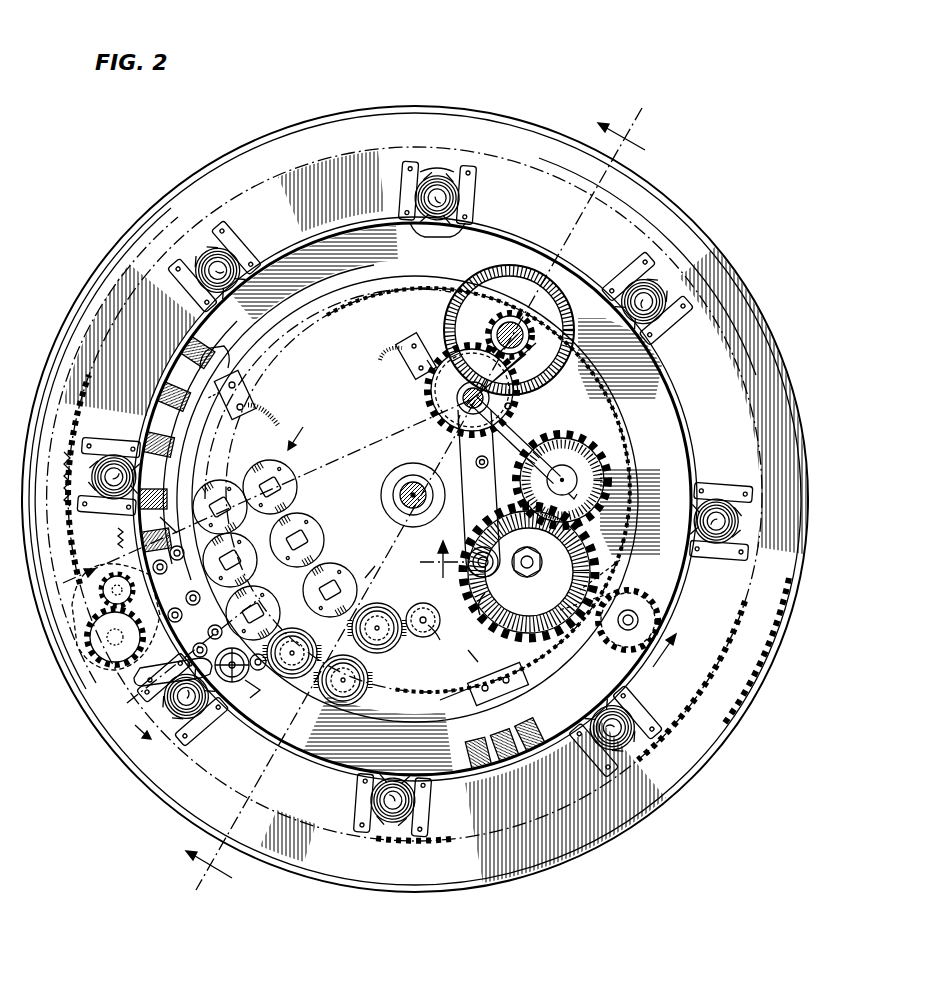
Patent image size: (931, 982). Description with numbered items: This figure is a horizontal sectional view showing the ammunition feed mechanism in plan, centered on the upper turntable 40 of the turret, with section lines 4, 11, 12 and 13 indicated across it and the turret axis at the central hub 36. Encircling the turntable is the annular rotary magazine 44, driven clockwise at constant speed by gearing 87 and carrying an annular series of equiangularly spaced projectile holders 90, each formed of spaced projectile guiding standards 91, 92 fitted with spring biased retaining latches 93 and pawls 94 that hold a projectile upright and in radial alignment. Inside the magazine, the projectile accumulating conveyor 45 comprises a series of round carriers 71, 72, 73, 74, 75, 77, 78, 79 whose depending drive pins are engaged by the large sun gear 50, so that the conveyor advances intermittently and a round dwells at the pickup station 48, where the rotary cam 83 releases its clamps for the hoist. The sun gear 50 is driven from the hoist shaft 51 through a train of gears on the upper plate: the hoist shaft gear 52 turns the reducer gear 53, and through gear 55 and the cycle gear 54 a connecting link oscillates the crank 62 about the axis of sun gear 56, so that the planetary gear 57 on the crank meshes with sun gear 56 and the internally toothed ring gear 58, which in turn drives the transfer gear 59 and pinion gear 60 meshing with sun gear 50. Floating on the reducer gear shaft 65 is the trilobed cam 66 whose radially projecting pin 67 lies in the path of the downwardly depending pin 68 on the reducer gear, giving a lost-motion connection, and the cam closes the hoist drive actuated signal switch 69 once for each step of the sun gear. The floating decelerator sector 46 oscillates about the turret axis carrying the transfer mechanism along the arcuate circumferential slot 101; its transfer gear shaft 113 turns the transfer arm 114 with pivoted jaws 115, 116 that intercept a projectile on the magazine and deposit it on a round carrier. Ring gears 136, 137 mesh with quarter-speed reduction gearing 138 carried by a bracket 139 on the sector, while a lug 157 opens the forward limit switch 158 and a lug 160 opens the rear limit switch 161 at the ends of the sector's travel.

The section line 4- 4 is at (420, 502).
The section line 11- 11 is at (550, 610).
The section line 12- 12 is at (257, 491).
The section line 13- 13 is at (184, 668).
The central shaft hub 36 is at (398, 488).
The upper turntable 40 is at (680, 470).
The annular rotary magazine 44 is at (656, 198).
The projectile accumulating conveyor 45 is at (302, 429).
The floating decelerator sector 46 is at (320, 756).
The pickup station 48 is at (422, 640).
The sun gear 50 is at (632, 556).
The shaft 51 is at (495, 332).
The hoist shaft gear 52 is at (552, 378).
The reducer gear 53 is at (426, 389).
The cycle gear 54 is at (526, 460).
The gear of gear train 55 is at (614, 447).
The sun gear 56 is at (499, 526).
The planetary gear 57 is at (478, 570).
The ring gear 58 is at (479, 618).
The transfer gear 59 is at (626, 594).
The pinion gear 60 is at (652, 606).
The crank 62 is at (488, 620).
The reducer gear shaft 65 is at (457, 406).
The trilobed cam 66 is at (503, 411).
The radially projecting pin 67 is at (458, 422).
The downwardly depending pin 68 is at (512, 406).
The hoist drive actuated signal switch 69 is at (407, 349).
The round carrier 71 is at (382, 576).
The round carrier 72 is at (322, 533).
The round carrier 73 is at (292, 468).
The round carrier 74 is at (226, 482).
The round carrier 75 is at (240, 545).
The round carrier 77 is at (308, 638).
The round carrier 78 is at (370, 684).
The round carrier 79 is at (386, 606).
The rotary cam 83 is at (434, 641).
The gearing 87 is at (736, 732).
The projectile holder 90 is at (240, 220).
The projectile guiding standard 91 is at (400, 186).
The projectile guiding standard 92 is at (470, 174).
The spring biased retaining latch 93 is at (413, 226).
The pawl 94 is at (420, 167).
The arcuate circumferential slot 101 is at (212, 357).
The transfer gear shaft 113 is at (262, 671).
The transfer arm 114 is at (252, 697).
The jaw 115 is at (140, 678).
The moving jaw 116 is at (235, 681).
The ring gear 136 is at (115, 536).
The ring gear 137 is at (60, 480).
The quarter-speed reduction gearing 138 is at (92, 610).
The bracket 139 is at (75, 694).
The lug 157 is at (488, 718).
The forward limit switch 158 is at (464, 650).
The lug 160 is at (184, 482).
The rear limit switch 161 is at (265, 388).